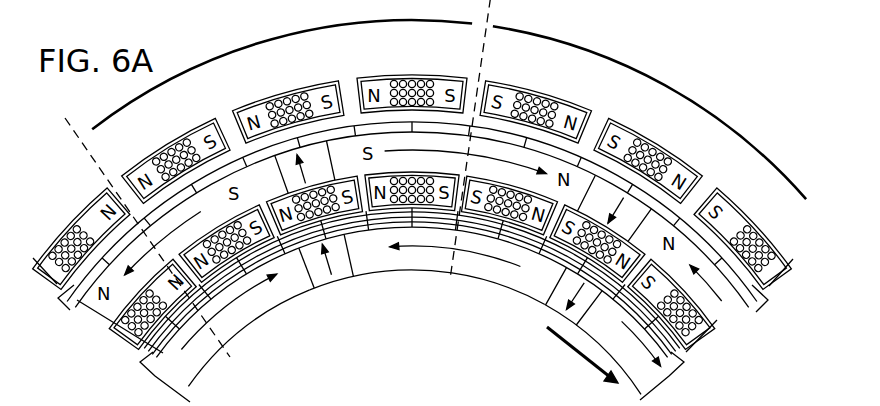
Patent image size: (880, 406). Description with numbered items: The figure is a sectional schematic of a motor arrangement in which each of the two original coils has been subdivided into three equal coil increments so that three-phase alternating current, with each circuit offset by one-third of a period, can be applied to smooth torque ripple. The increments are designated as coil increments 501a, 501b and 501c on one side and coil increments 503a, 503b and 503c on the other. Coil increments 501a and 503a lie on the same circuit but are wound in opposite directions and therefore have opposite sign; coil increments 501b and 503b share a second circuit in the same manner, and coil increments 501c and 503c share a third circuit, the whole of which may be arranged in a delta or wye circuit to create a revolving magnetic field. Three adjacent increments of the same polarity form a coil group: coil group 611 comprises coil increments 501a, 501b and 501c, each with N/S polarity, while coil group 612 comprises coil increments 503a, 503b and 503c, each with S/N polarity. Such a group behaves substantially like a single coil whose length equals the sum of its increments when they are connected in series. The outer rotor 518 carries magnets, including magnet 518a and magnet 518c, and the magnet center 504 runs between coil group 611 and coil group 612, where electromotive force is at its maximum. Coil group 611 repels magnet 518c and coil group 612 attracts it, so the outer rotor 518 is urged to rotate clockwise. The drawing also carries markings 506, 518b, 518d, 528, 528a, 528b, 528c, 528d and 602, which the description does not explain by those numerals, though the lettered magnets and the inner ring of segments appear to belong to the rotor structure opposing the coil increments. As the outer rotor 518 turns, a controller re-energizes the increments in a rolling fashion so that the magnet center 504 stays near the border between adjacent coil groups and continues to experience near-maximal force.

The coil increment 501a is at (158, 151).
The coil increment 501b is at (268, 98).
The coil increment 501c is at (400, 77).
The coil increment 503a is at (540, 92).
The coil increment 503b is at (683, 142).
The coil increment 503c is at (750, 222).
The magnet center 504 is at (487, 22).
The boundary line 506 is at (95, 168).
The outer rotor 518 is at (97, 312).
The magnet 518a is at (82, 308).
The yoke segment 518b is at (238, 162).
The magnet 518c is at (354, 140).
The yoke segment 518d is at (597, 165).
The inner magnet array yoke 528 is at (148, 380).
The inner yoke segment 528a is at (253, 310).
The inner yoke segment 528b is at (342, 274).
The inner yoke segment 528c is at (486, 278).
The inner yoke segment 528d is at (557, 308).
The direction of motion arrow 602 is at (570, 360).
The coil group 611 is at (280, 37).
The coil group 612 is at (664, 88).